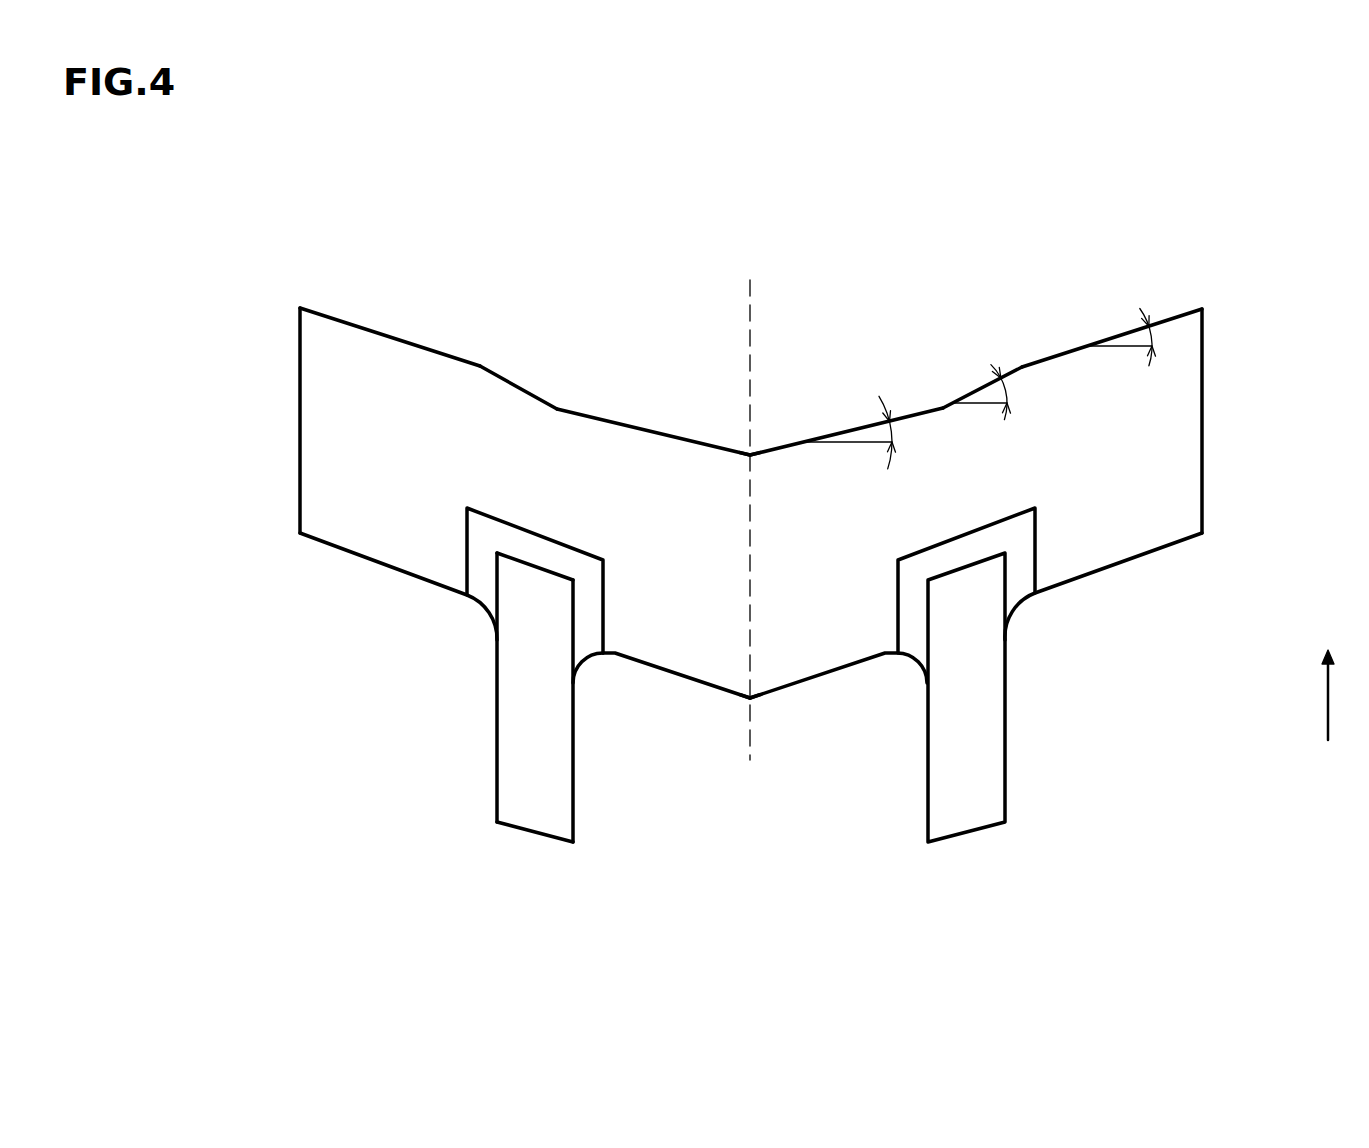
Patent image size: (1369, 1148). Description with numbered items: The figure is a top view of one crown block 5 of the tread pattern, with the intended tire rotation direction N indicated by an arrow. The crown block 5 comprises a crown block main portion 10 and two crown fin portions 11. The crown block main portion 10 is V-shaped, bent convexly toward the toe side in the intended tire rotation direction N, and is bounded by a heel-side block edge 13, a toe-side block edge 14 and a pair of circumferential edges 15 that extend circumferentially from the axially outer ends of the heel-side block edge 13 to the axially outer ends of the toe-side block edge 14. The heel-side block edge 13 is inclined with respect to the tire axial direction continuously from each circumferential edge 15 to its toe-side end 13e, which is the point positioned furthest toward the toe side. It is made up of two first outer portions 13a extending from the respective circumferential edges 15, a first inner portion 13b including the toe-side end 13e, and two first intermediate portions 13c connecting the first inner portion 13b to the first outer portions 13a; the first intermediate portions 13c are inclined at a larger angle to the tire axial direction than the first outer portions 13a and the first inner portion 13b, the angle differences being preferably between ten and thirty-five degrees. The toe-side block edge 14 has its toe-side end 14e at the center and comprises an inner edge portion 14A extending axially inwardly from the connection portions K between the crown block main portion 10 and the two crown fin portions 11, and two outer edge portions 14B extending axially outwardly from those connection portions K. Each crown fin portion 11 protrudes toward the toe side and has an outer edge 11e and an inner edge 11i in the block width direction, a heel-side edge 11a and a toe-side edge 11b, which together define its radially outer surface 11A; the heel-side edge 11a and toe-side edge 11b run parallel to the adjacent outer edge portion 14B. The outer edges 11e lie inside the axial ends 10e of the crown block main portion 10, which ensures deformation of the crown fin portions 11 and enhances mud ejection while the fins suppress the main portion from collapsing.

The crown block 5 is at (438, 220).
The crown block main portion 10 is at (380, 303).
The end of the crown block main portion in the tire axial direction 10e is at (300, 368).
The circumferential edge 15 is at (300, 432).
The heel-side block edge 13 is at (1055, 352).
The first outer portion 13a is at (435, 348).
The first inner portion 13b is at (632, 427).
The first intermediate portion 13c is at (525, 388).
The toe-side end of the heel-side block edge 13e is at (755, 450).
The toe-side block edge 14 is at (337, 575).
The inner edge portion 14A is at (835, 670).
The outer edge portion 14B is at (392, 570).
The toe-side end of the toe-side block edge 14e is at (753, 700).
The crown fin portion 11 is at (1023, 738).
The radially outer surface of the crown fin portion 11A is at (968, 784).
The heel-side edge 11a is at (535, 563).
The toe-side edge 11b is at (535, 835).
The outer edge 11e is at (497, 753).
The inner edge 11i is at (575, 805).
The connection portion K is at (598, 675).
The intended tire rotation direction N is at (1328, 678).